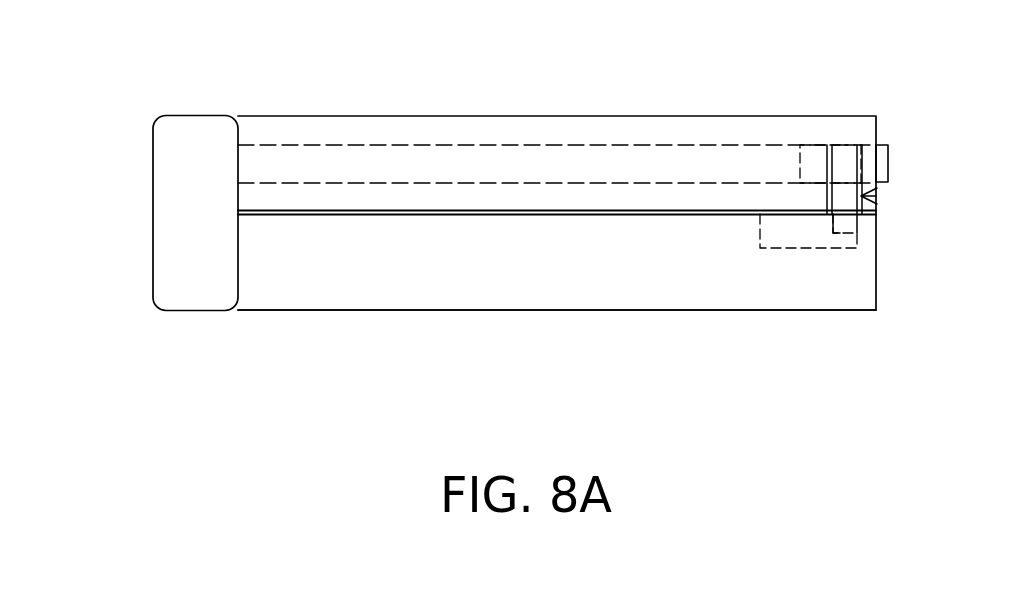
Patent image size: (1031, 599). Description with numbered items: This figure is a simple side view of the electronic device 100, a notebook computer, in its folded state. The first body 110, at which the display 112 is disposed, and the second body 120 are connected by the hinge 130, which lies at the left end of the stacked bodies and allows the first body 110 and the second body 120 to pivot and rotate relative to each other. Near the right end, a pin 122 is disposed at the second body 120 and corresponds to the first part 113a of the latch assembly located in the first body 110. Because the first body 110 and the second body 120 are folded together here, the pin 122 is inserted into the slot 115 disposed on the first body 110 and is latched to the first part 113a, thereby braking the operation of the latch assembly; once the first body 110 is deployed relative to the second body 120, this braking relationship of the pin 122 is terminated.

The electronic device 100 is at (1012, 427).
The first body 110 is at (390, 116).
The display 112 is at (505, 162).
The first part of the latch assembly 113a is at (888, 164).
The slot 115 is at (877, 193).
The second body 120 is at (638, 283).
The pin 122 is at (840, 233).
The hinge 130 is at (182, 207).